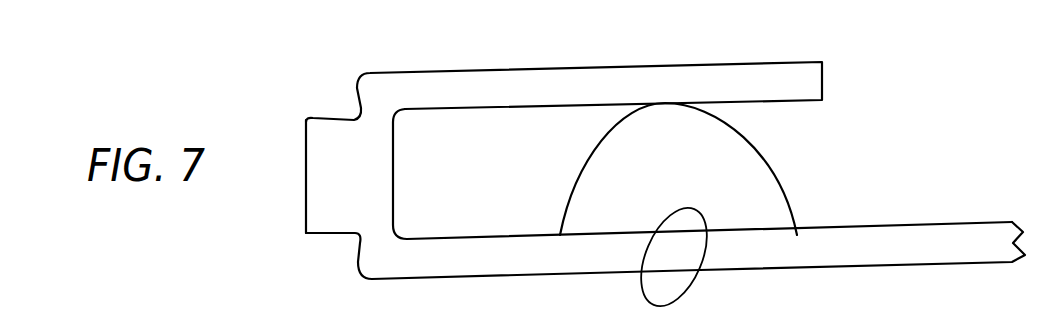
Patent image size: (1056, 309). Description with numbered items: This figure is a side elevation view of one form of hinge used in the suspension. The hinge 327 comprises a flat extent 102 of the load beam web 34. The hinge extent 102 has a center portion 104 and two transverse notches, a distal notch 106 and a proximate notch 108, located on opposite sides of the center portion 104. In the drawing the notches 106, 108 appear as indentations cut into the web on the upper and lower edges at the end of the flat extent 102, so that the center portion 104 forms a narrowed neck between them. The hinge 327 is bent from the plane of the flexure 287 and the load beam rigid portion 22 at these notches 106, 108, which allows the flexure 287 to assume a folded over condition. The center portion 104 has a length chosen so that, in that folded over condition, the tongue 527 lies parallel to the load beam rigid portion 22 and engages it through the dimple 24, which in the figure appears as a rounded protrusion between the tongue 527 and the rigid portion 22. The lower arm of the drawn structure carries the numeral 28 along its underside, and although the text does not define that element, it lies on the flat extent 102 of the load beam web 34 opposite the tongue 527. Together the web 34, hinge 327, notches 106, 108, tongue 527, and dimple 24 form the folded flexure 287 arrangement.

The tongue 527 is at (747, 62).
The distal transverse notch 106 is at (355, 115).
The hinge 327 is at (306, 178).
The center portion 104 is at (384, 184).
The proximate transverse notch 108 is at (358, 240).
The lower arm bottom surface 28 is at (425, 281).
The flat extent 102 is at (843, 248).
The load beam web 34 is at (917, 223).
The dimple 24 is at (770, 190).
The load beam rigid portion 22 is at (694, 260).
The flexure 287 is at (877, 133).